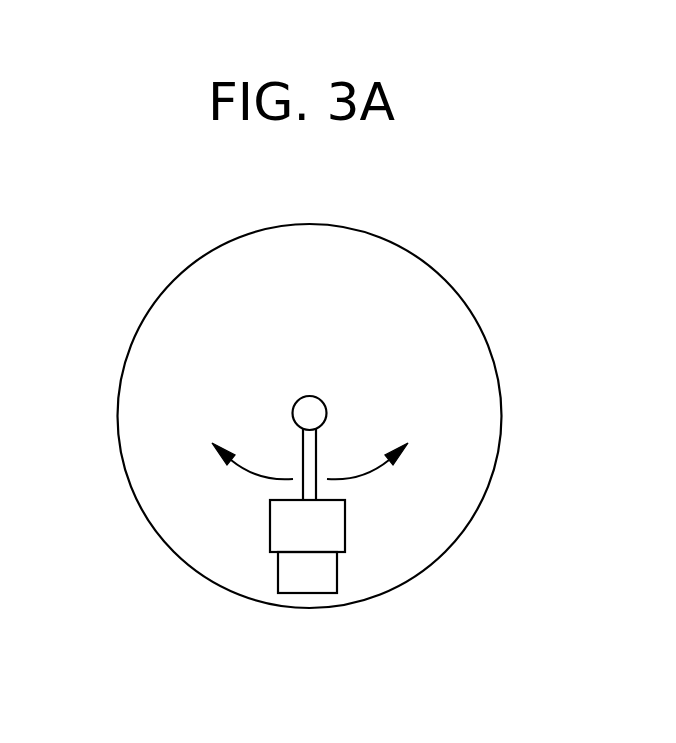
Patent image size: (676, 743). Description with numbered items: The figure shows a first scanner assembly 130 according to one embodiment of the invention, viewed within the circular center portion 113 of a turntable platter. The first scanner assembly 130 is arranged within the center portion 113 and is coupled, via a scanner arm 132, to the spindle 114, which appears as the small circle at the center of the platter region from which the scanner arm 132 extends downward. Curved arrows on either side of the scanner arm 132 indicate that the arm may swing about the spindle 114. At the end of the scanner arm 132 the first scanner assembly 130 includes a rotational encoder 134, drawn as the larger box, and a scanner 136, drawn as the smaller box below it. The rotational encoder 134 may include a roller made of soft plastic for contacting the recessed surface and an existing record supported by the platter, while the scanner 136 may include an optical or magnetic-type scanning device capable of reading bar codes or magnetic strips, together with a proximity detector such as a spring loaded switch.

The center portion 113 is at (430, 320).
The first scanner assembly 130 is at (90, 270).
The spindle 114 is at (310, 406).
The scanner arm 132 is at (300, 463).
The rotational encoder 134 is at (329, 539).
The scanner 136 is at (329, 584).